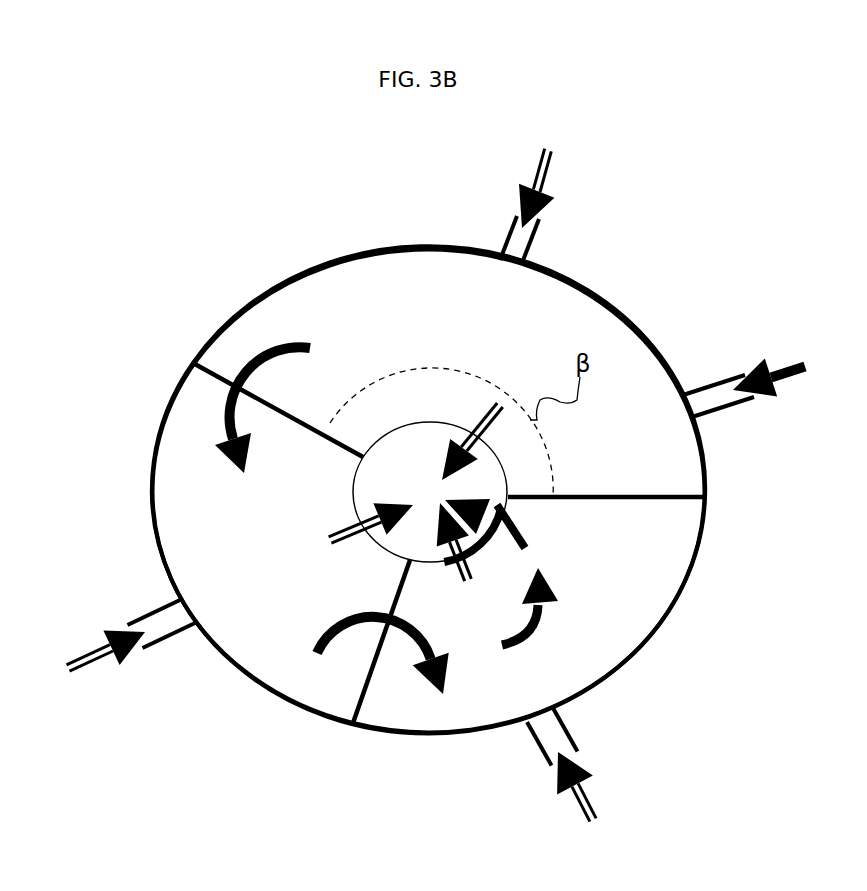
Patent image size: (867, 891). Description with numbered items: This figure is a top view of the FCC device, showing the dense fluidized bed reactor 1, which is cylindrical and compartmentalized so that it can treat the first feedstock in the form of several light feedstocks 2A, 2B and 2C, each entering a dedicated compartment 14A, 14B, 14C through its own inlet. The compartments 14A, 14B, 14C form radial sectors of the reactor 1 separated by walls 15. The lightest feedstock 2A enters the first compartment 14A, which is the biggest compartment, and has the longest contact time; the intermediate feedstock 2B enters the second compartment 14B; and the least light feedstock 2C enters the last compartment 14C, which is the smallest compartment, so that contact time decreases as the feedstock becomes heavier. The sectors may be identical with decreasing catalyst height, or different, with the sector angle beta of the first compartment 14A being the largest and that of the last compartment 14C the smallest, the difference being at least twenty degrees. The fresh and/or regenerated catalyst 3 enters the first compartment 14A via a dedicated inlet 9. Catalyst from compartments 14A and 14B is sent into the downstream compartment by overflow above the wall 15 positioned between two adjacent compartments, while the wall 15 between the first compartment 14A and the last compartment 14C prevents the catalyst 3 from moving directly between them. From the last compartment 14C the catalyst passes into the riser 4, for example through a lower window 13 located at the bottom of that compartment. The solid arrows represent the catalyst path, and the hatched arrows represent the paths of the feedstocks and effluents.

The dense fluidized bed reactor 1 is at (248, 680).
The lightest feedstock 2A is at (552, 162).
The intermediate feedstock 2B is at (105, 658).
The least light feedstock 2C is at (587, 793).
The fresh and/or regenerated catalyst 3 is at (790, 360).
The riser 4 is at (397, 423).
The dedicated inlet 9 is at (740, 398).
The lower window 13 is at (507, 517).
The first compartment 14A is at (447, 317).
The second compartment 14B is at (197, 517).
The last compartment 14C is at (482, 710).
The wall 15 is at (200, 370).